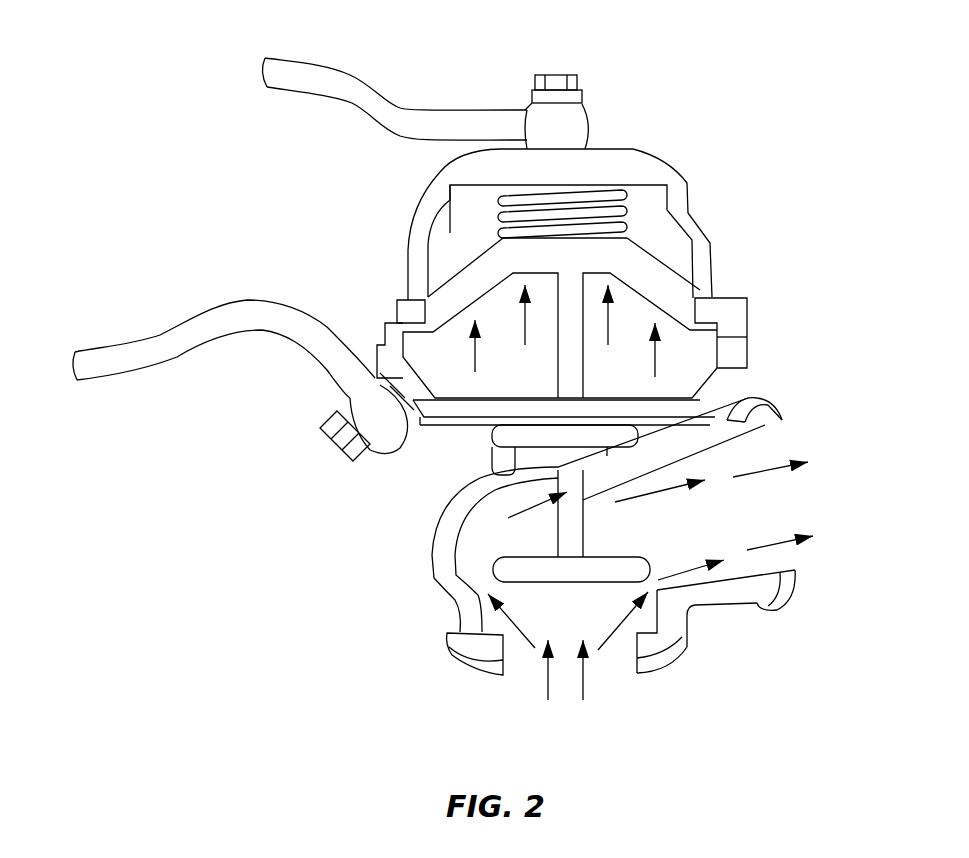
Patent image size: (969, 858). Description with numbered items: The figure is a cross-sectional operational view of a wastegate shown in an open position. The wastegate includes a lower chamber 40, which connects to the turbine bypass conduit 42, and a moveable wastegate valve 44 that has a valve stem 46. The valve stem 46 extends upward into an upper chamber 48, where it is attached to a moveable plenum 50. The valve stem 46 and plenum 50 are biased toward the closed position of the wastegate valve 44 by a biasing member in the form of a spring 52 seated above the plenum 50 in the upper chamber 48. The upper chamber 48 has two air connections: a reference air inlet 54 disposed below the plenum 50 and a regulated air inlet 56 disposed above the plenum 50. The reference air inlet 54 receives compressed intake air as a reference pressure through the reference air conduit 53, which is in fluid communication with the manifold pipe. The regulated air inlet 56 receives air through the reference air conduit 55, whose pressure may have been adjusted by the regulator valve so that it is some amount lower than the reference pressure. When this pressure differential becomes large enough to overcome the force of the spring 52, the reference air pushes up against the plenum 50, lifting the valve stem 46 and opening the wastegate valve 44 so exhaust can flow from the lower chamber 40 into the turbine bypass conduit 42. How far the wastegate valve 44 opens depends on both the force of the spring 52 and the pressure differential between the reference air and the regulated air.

The lower chamber 40 is at (430, 433).
The turbine bypass conduit 42 is at (770, 407).
The wastegate valve 44 is at (590, 583).
The valve stem 46 is at (557, 348).
The upper chamber 48 is at (752, 150).
The plenum 50 is at (473, 273).
The spring 52 is at (503, 213).
The reference air conduit 53 is at (155, 350).
The reference air inlet 54 is at (385, 405).
The reference air conduit 55 is at (343, 83).
The regulated air inlet 56 is at (575, 152).